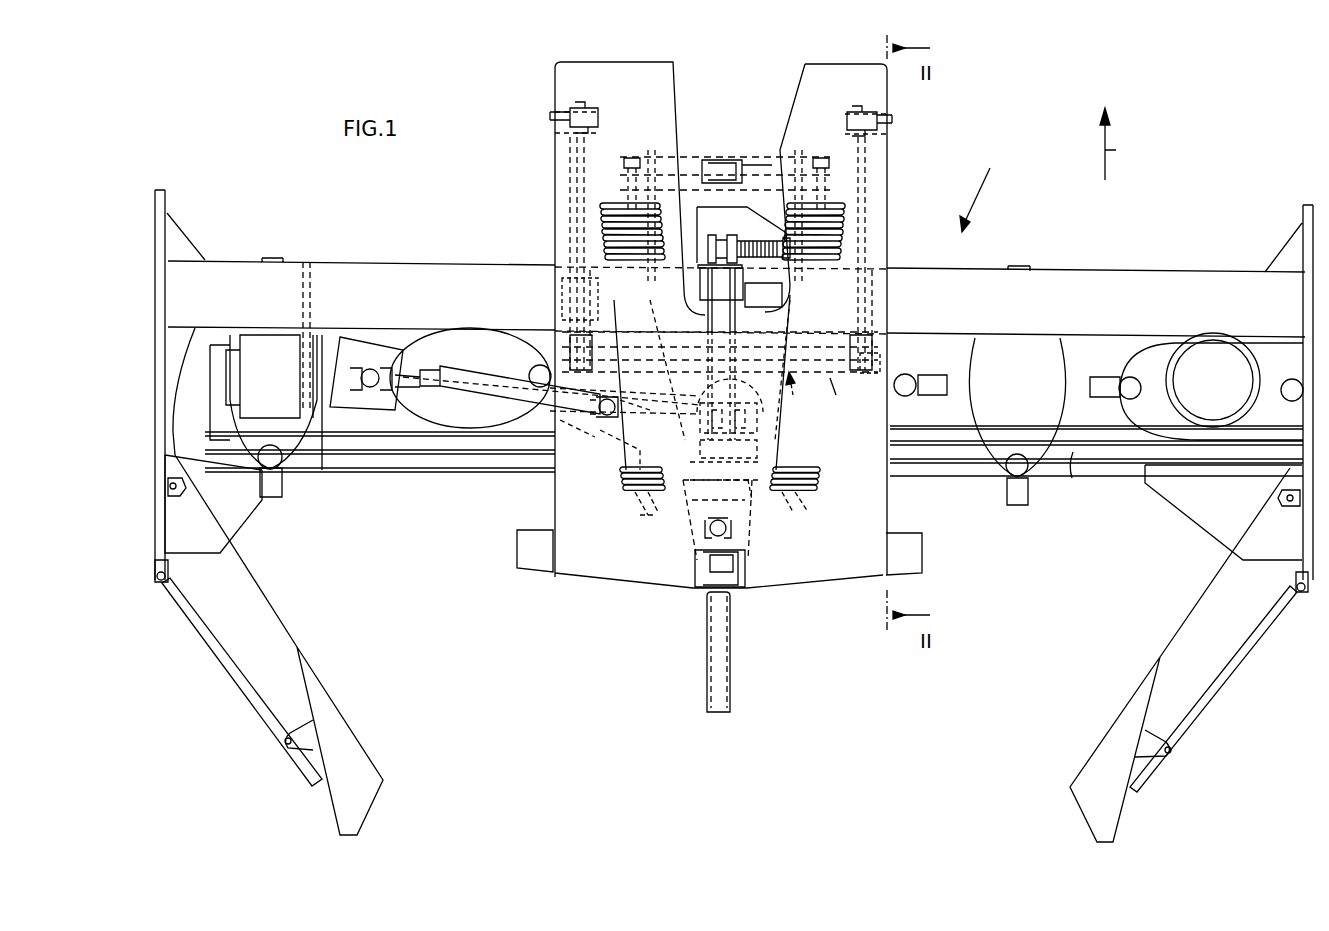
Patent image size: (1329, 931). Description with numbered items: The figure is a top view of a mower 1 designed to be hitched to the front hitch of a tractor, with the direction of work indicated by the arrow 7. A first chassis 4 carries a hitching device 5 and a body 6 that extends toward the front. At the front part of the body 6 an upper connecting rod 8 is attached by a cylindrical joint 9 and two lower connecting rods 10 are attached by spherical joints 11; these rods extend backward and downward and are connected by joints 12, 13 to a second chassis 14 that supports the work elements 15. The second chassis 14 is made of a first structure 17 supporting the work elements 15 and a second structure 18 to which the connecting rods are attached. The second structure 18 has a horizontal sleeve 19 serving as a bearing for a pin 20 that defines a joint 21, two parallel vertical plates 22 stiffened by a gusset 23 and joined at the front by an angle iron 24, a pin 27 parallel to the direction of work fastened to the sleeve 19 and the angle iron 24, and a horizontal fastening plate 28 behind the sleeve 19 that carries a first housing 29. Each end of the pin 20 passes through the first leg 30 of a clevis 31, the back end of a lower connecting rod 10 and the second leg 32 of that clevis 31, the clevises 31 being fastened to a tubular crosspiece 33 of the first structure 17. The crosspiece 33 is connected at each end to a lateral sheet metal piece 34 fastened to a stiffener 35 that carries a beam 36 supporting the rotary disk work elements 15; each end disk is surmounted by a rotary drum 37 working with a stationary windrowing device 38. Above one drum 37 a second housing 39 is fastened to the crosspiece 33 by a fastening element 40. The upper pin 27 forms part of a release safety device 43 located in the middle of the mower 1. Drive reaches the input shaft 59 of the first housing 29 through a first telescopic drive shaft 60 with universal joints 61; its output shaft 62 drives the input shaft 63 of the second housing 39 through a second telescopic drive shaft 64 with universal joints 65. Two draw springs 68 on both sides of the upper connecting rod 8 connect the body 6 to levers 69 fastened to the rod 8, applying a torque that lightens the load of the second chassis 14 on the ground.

The mower 1 is at (979, 189).
The first chassis 4 is at (580, 576).
The hitching device 5 is at (517, 560).
The body 6 is at (555, 214).
The arrow 7 is at (1115, 144).
The upper connecting rod 8 is at (703, 165).
The joint 9 is at (768, 160).
The lower connecting rods 10 is at (572, 183).
The joint 11 is at (880, 125).
The joint 12 is at (740, 445).
The joint 13 is at (875, 338).
The second chassis 14 is at (959, 478).
The work elements 15 is at (1065, 410).
The first structure 17 is at (379, 265).
The second structure 18 is at (800, 396).
The sleeve 19 is at (840, 395).
The pin 20 is at (858, 374).
The joint 21 is at (892, 340).
The plates 22 is at (768, 420).
The gusset 23 is at (785, 347).
The angle iron 24 is at (703, 268).
The pin 27 is at (717, 233).
The fastening plate 28 is at (698, 463).
The first housing 29 is at (752, 498).
The first leg 30 is at (825, 300).
The clevis 31 is at (538, 368).
The second leg 32 is at (875, 297).
The tubular crosspiece 33 is at (1122, 288).
The lateral sheet metal piece 34 is at (168, 215).
The stiffener 35 is at (1082, 479).
The beam 36 is at (1098, 372).
The rotary drum 37 is at (235, 380).
The stationary windrowing device 38 is at (310, 682).
The second housing 39 is at (262, 345).
The fastening element 40 is at (322, 340).
The release safety device 43 is at (759, 244).
The input shaft 59 is at (690, 510).
The first telescopic drive shaft 60 is at (712, 666).
The universal joints 61 is at (737, 533).
The output shaft 62 is at (622, 452).
The input shaft 63 is at (355, 355).
The second telescopic drive shaft 64 is at (462, 388).
The universal joints 65 is at (380, 365).
The draw springs 68 is at (822, 492).
The lever 69 is at (802, 158).